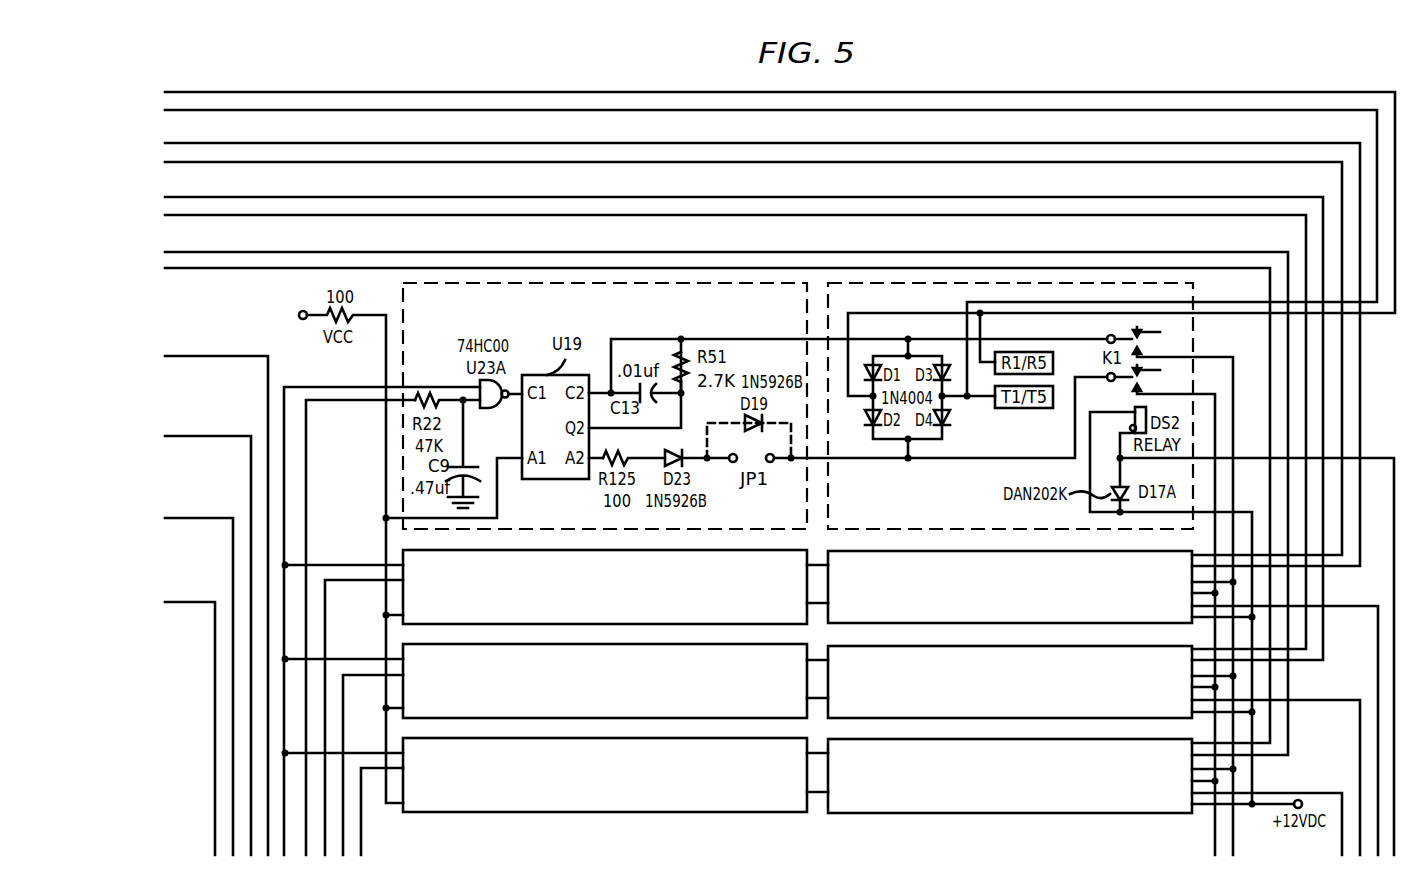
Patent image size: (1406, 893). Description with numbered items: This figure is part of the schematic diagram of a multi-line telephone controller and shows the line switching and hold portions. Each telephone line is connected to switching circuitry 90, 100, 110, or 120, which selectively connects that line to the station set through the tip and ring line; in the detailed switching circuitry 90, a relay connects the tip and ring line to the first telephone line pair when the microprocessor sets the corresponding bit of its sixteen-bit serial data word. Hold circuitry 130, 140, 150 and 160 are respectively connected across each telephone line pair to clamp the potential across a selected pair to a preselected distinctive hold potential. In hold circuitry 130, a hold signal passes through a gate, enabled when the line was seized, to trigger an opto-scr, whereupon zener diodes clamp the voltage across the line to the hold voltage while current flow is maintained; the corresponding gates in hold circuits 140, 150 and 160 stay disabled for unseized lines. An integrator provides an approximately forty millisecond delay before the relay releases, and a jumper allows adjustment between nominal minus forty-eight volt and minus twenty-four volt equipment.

The switching circuitry 90 is at (888, 519).
The switching circuitry 100 is at (892, 614).
The switching circuitry 110 is at (892, 708).
The switching circuitry 120 is at (892, 802).
The hold circuitry 130 is at (784, 521).
The hold circuitry 140 is at (786, 614).
The hold circuitry 150 is at (786, 708).
The hold circuitry 160 is at (786, 802).